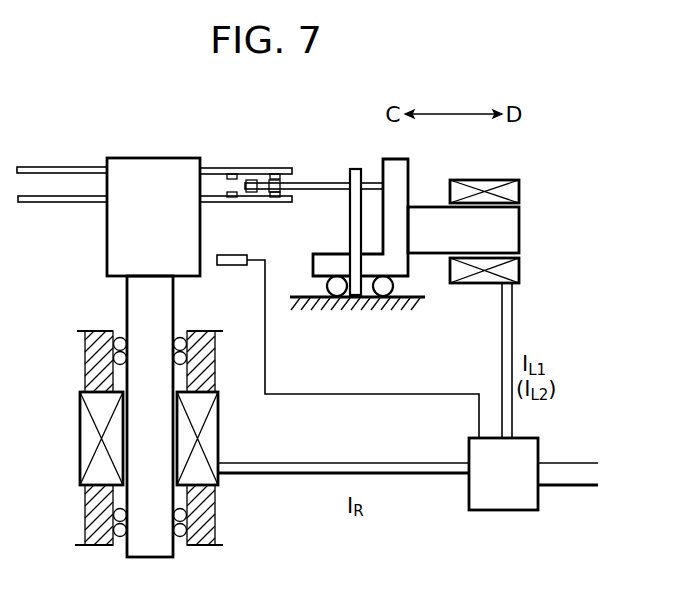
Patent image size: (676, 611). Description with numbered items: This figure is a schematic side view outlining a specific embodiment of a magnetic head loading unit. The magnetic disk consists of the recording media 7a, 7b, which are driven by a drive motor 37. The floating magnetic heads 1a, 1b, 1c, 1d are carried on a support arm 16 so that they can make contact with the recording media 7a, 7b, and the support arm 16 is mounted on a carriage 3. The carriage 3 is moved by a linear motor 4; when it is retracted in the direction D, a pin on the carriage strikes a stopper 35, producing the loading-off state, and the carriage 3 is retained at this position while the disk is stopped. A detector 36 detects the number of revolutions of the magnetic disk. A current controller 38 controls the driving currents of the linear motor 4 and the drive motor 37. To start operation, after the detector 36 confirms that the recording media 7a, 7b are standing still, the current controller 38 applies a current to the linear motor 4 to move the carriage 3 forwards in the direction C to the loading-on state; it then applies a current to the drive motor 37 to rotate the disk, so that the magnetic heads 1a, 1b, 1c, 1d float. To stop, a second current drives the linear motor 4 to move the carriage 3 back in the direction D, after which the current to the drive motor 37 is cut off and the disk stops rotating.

The recording medium 7a is at (34, 168).
The recording medium 7b is at (34, 202).
The magnetic head 1a is at (232, 174).
The magnetic head 1b is at (277, 174).
The magnetic head 1c is at (232, 203).
The magnetic head 1d is at (275, 203).
The support arm 16 is at (330, 181).
The carriage 3 is at (406, 160).
The stopper 35 is at (355, 165).
The linear motor 4 is at (519, 237).
The detector 36 is at (230, 265).
The drive motor 37 is at (205, 475).
The current controller 38 is at (496, 510).